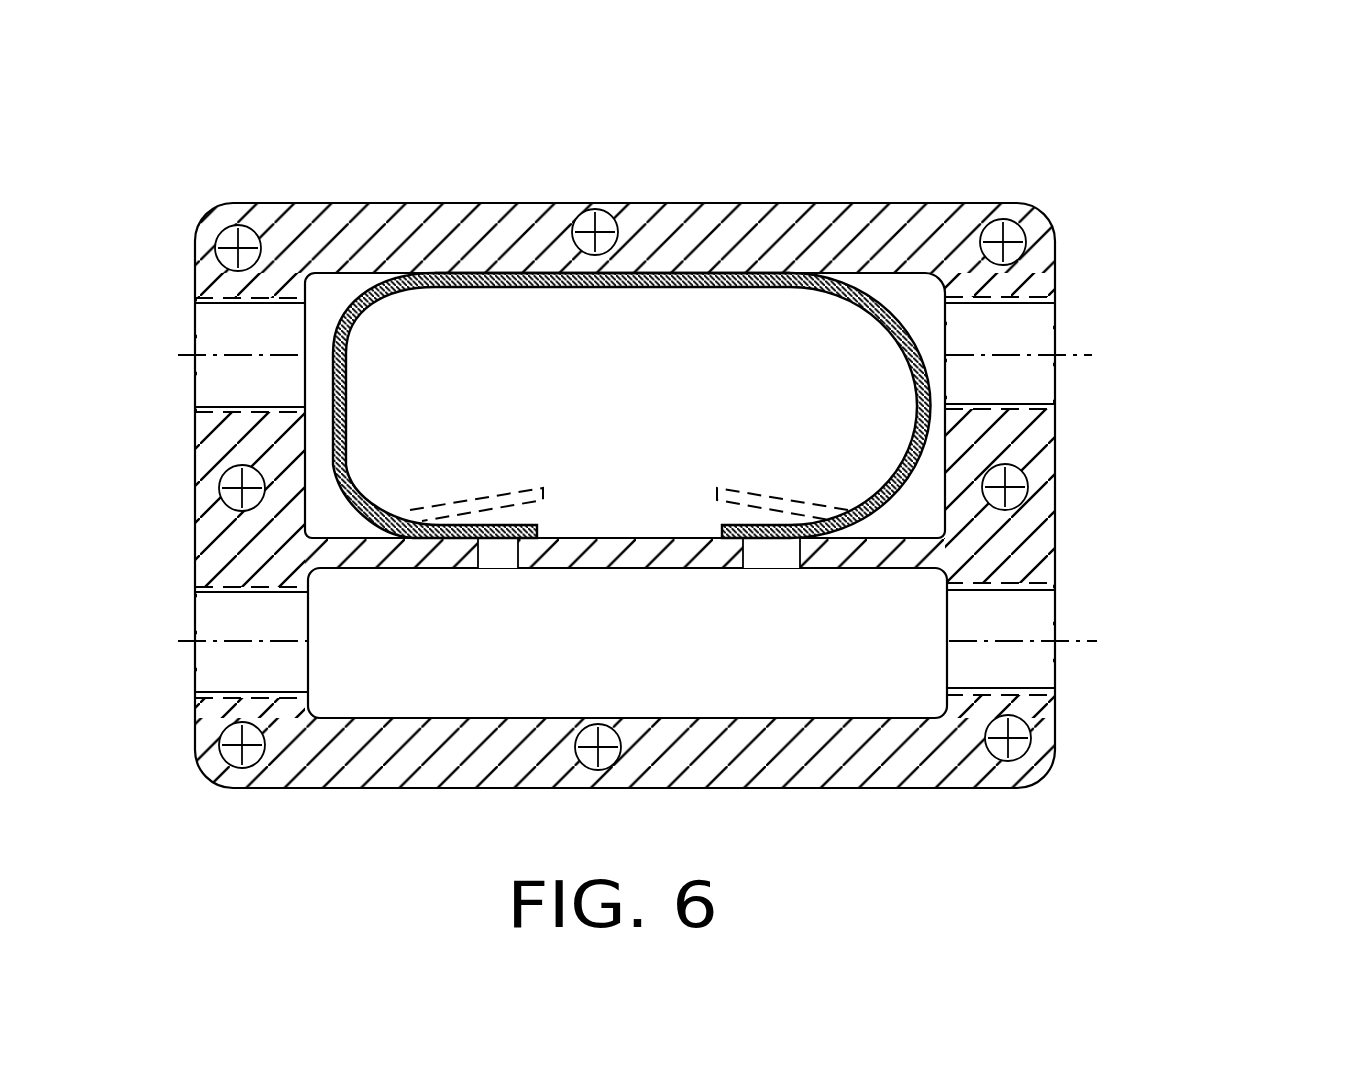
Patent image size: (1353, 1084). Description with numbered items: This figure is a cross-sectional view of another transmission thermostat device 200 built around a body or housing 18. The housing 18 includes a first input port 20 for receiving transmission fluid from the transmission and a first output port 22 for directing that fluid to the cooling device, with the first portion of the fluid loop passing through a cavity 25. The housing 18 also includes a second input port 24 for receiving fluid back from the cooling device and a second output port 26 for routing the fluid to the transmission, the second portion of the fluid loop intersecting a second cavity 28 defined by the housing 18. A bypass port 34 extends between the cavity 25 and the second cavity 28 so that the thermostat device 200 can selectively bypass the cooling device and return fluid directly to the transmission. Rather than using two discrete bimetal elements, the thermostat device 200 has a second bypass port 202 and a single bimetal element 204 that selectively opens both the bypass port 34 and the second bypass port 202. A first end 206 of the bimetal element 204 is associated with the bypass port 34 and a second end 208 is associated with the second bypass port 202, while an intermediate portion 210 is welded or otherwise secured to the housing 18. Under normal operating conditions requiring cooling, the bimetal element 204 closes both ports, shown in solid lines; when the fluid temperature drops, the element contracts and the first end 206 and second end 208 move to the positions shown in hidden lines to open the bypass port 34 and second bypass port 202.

The thermostat device 200 is at (692, 436).
The housing 18 is at (1057, 470).
The first input port 20 is at (1033, 403).
The first output port 22 is at (247, 407).
The second input port 24 is at (250, 690).
The second output port 26 is at (1032, 682).
The cavity 25 is at (640, 347).
The second cavity 28 is at (722, 652).
The bypass port 34 is at (797, 543).
The second bypass port 202 is at (510, 550).
The bimetal element 204 is at (713, 277).
The first end 206 is at (723, 527).
The second end 208 is at (472, 503).
The intermediate portion 210 is at (527, 277).